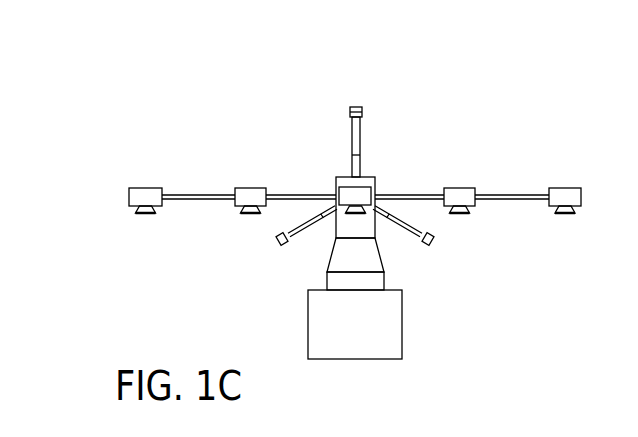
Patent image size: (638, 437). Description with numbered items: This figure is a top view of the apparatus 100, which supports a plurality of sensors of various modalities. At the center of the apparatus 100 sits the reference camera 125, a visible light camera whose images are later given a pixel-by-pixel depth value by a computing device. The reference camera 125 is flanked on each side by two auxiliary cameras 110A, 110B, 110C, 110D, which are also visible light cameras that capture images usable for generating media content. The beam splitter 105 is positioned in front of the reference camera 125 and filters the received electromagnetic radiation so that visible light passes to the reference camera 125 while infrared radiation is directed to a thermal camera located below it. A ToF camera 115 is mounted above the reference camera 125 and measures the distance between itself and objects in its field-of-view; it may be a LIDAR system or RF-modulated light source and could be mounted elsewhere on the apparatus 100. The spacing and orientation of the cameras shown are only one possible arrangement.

The apparatus 100 is at (137, 53).
The beam splitter 105 is at (402, 310).
The auxiliary camera 110A is at (137, 187).
The auxiliary camera 110B is at (247, 187).
The auxiliary camera 110C is at (455, 187).
The auxiliary camera 110D is at (558, 187).
The ToF camera 115 is at (365, 187).
The reference camera 125 is at (347, 177).